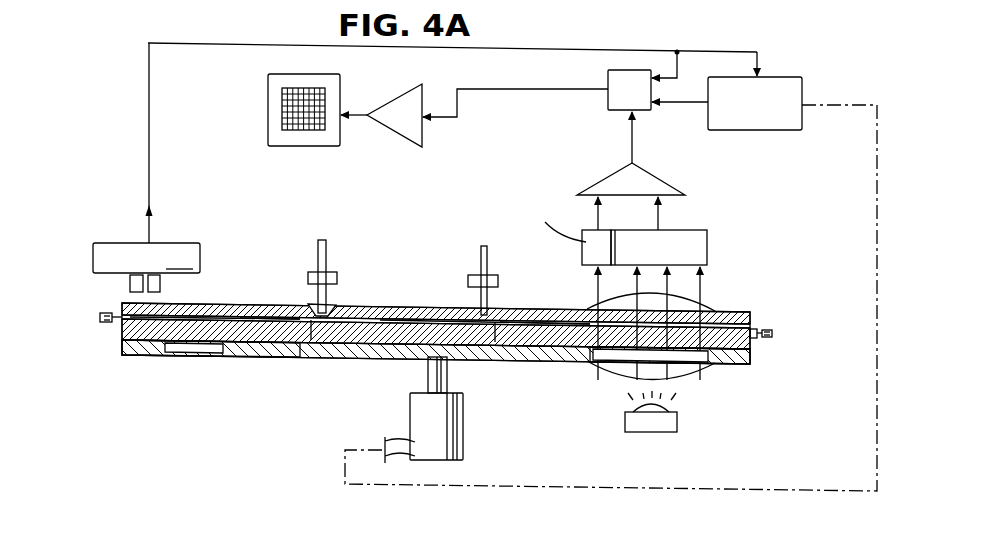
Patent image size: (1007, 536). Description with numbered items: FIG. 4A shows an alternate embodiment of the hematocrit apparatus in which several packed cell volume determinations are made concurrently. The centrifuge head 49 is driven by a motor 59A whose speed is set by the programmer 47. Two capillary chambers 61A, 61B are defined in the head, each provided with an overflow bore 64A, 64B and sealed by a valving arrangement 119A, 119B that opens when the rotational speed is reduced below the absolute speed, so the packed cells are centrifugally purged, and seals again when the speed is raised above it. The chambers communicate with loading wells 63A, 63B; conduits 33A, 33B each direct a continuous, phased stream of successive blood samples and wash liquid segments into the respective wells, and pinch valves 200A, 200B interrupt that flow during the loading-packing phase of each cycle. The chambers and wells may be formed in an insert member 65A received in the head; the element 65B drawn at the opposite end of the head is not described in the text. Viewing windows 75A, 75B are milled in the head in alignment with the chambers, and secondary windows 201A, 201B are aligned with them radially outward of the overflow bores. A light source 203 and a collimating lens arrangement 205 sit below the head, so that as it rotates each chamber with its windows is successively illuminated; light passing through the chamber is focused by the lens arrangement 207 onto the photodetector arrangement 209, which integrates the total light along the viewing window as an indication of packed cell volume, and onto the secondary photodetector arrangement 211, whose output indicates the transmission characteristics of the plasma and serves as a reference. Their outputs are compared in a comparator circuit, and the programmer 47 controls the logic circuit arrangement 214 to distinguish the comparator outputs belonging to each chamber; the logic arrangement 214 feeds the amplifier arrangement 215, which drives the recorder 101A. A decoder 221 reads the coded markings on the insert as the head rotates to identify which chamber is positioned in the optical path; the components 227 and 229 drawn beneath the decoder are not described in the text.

The recorder 101A is at (271, 80).
The amplifier arrangement 215 is at (403, 97).
The logic circuit arrangement 214 is at (606, 108).
The programmer 47 is at (793, 89).
The secondary photodetector arrangement 211 is at (667, 184).
The photodetector arrangement 209 is at (693, 247).
The lens arrangement 207 is at (707, 300).
The collimating lens arrangement 205 is at (688, 378).
The light source 203 is at (664, 432).
The decoder 221 is at (146, 258).
The decoder output 229 is at (128, 284).
The decoder output 227 is at (161, 287).
The centrifuge head 49 is at (362, 354).
The viewing window 75A is at (195, 354).
The viewing window 75B is at (712, 364).
The secondary window 201A is at (243, 354).
The secondary window 201B is at (590, 361).
The loading well 63A is at (313, 321).
The loading well 63B is at (495, 340).
The capillary chamber 61A is at (242, 314).
The capillary chamber 61B is at (530, 315).
The overflow bore 64A is at (278, 318).
The overflow bore 64B is at (580, 321).
The insert member 65A is at (112, 307).
The end fitting 65B is at (760, 314).
The valving arrangement 119A is at (120, 321).
The valving arrangement 119B is at (754, 339).
The conduit 33A is at (328, 256).
The conduit 33B is at (480, 256).
The pinch valve 200A is at (330, 278).
The pinch valve 200B is at (468, 282).
The motor 59A is at (463, 445).